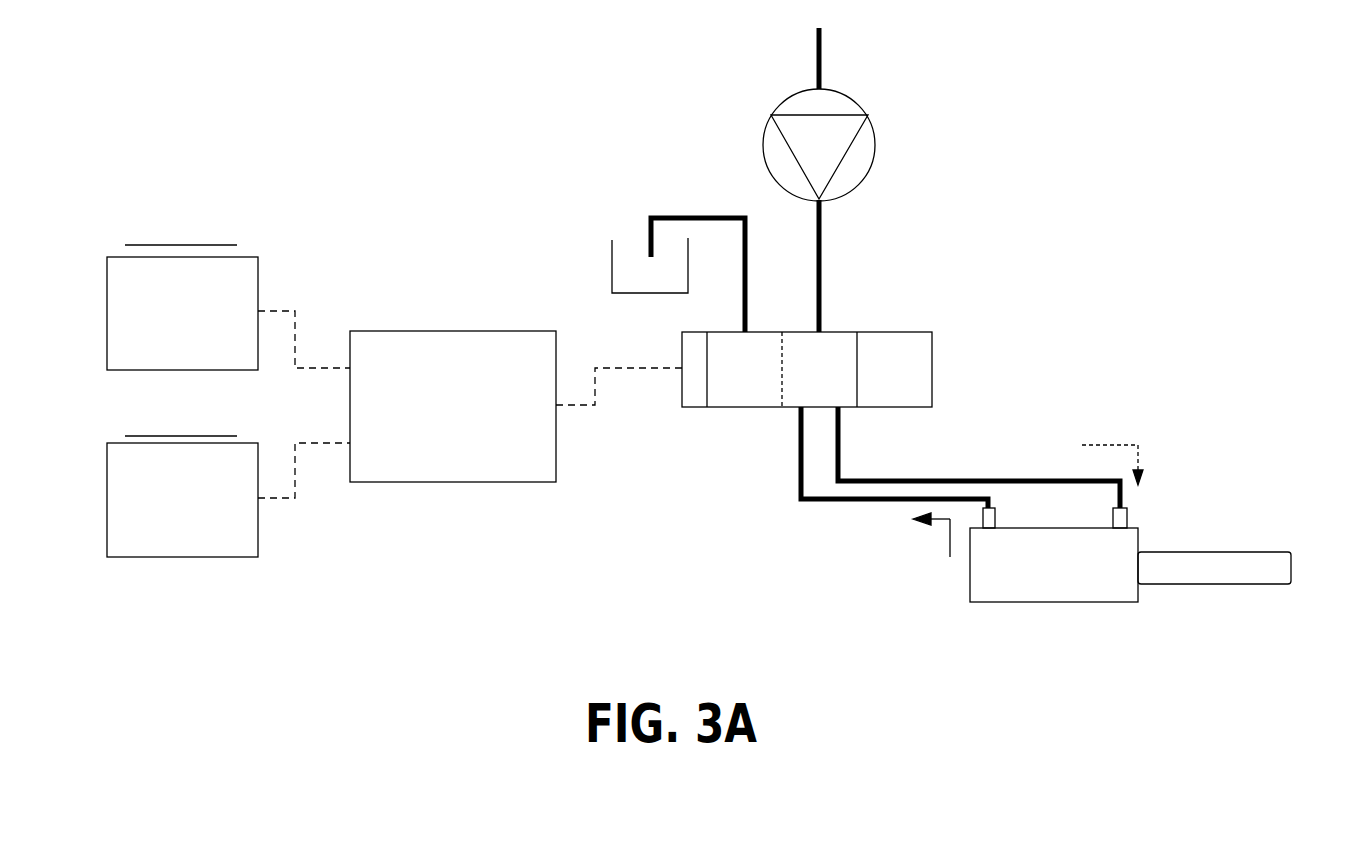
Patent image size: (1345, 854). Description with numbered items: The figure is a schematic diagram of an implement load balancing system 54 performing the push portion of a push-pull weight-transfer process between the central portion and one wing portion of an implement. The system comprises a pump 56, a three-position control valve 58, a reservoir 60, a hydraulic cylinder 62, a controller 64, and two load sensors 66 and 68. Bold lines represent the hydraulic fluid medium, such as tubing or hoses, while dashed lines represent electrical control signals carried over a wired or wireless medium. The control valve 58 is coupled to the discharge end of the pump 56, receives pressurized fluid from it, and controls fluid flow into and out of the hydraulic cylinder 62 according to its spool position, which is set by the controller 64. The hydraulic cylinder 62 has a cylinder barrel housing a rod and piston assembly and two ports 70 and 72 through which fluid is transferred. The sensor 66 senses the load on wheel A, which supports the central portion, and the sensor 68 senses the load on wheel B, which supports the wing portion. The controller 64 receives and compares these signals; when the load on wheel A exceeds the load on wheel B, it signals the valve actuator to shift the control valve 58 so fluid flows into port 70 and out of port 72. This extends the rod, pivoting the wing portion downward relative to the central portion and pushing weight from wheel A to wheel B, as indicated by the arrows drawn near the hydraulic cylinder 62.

The implement load balancing system 54 is at (1152, 116).
The pump 56 is at (877, 142).
The control valve 58 is at (932, 352).
The reservoir 60 is at (612, 240).
The hydraulic cylinder 62 is at (1072, 569).
The controller 64 is at (467, 431).
The load sensor 66 is at (197, 338).
The load sensor 68 is at (197, 525).
The port 70 is at (1128, 522).
The port 72 is at (995, 515).